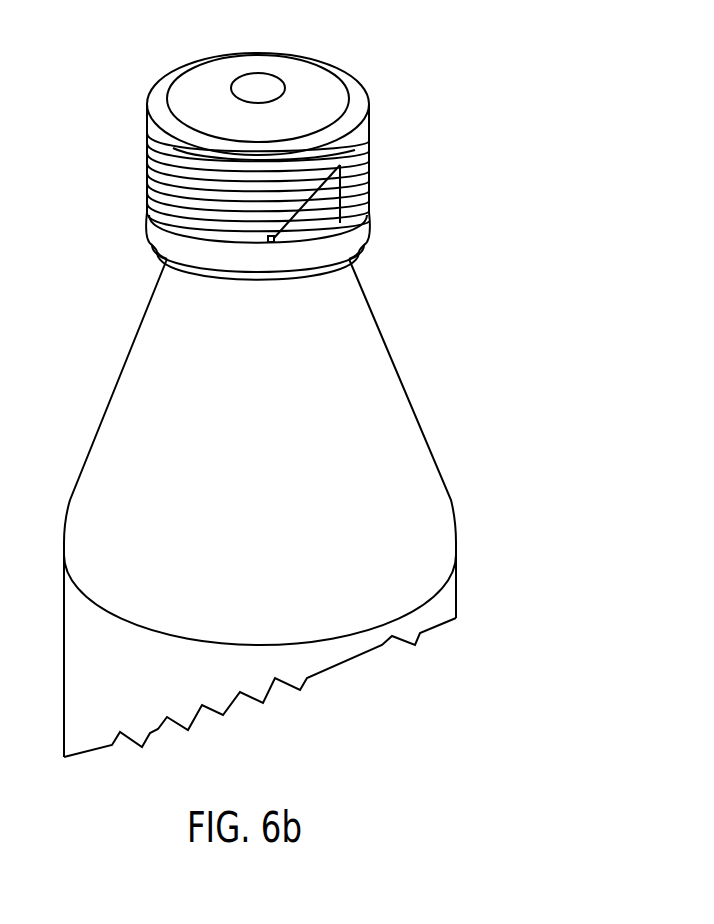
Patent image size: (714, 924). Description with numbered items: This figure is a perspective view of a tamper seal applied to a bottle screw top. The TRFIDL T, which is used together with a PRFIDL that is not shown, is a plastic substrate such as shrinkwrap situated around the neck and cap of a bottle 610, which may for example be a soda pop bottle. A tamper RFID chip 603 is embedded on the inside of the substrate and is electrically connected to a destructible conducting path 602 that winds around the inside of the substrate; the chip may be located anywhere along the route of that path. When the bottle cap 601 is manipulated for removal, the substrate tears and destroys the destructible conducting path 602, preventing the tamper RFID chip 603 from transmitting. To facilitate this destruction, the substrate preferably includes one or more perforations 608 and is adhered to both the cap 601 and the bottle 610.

The bottle cap 601 is at (303, 92).
The TRFIDL T is at (370, 142).
The destructible conducting path 602 is at (363, 197).
The tamper RFID chip 603 is at (273, 242).
The perforations 608 is at (340, 223).
The bottle 610 is at (353, 388).